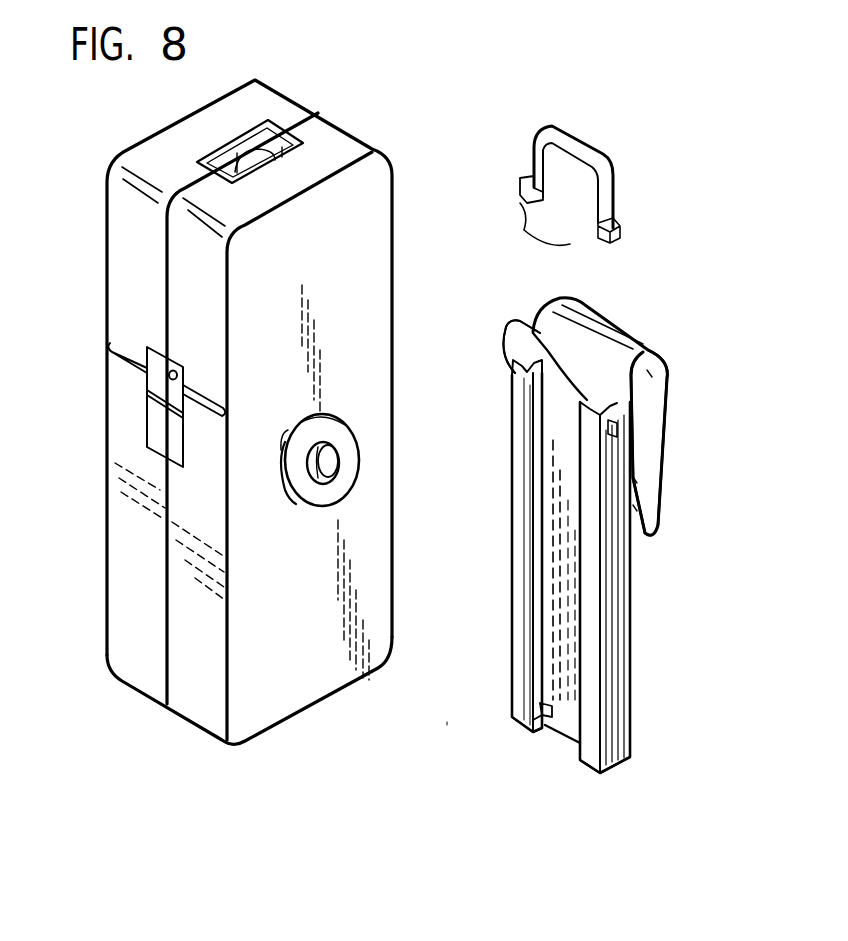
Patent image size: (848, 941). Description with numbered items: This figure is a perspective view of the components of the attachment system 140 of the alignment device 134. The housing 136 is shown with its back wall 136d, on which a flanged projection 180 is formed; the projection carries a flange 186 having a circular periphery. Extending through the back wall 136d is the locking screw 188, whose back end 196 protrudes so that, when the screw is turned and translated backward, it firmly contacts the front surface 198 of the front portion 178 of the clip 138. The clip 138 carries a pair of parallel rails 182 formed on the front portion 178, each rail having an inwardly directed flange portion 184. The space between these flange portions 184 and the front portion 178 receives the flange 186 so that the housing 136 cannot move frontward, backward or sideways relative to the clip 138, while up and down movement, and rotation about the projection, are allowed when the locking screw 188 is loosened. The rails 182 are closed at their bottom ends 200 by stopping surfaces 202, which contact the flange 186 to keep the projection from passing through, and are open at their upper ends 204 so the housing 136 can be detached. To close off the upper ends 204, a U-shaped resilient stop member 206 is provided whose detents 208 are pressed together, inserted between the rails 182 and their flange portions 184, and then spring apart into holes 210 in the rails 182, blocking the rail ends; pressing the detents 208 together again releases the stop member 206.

The alignment device 134 is at (127, 136).
The housing 136 is at (130, 223).
The back wall 136d is at (373, 223).
The flanged projection 180 is at (337, 422).
The flange 186 is at (352, 437).
The locking screw 188 is at (344, 457).
The back end 196 is at (337, 468).
The stop member 206 is at (607, 150).
The detents 208 is at (600, 240).
The clip 138 is at (652, 308).
The upper ends 204 is at (512, 319).
The holes 210 is at (618, 425).
The rails 182 is at (587, 493).
The flange portion 184 is at (583, 533).
The front portion 178 is at (550, 567).
The front surface 198 is at (550, 590).
The stopping surfaces 202 is at (545, 708).
The bottom ends 200 is at (522, 732).
The attachment system 140 is at (447, 720).